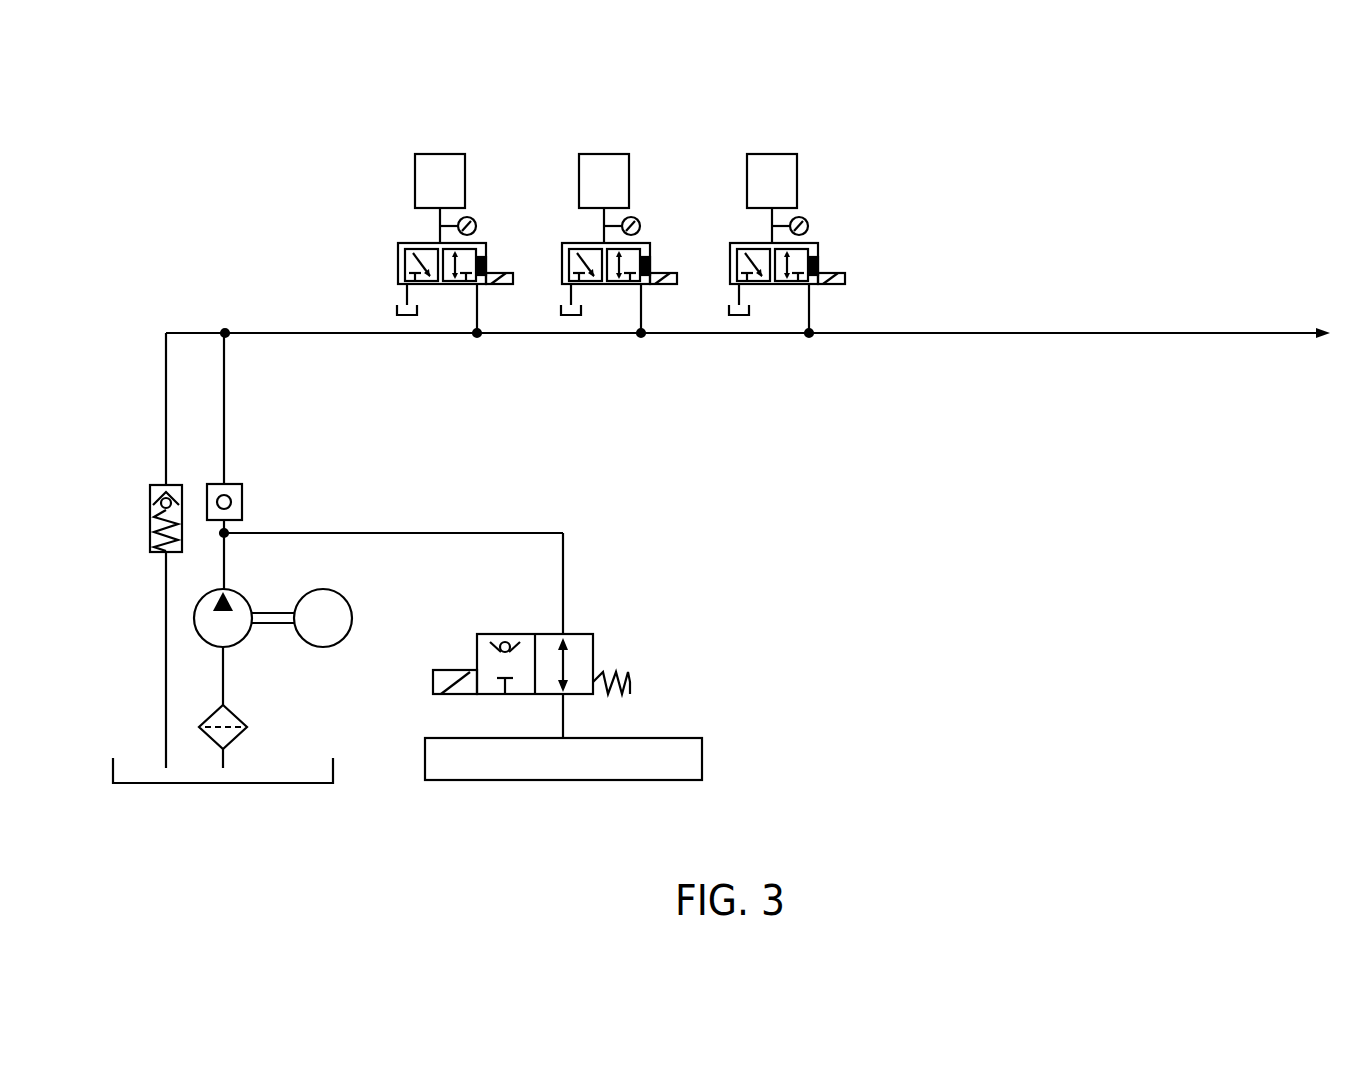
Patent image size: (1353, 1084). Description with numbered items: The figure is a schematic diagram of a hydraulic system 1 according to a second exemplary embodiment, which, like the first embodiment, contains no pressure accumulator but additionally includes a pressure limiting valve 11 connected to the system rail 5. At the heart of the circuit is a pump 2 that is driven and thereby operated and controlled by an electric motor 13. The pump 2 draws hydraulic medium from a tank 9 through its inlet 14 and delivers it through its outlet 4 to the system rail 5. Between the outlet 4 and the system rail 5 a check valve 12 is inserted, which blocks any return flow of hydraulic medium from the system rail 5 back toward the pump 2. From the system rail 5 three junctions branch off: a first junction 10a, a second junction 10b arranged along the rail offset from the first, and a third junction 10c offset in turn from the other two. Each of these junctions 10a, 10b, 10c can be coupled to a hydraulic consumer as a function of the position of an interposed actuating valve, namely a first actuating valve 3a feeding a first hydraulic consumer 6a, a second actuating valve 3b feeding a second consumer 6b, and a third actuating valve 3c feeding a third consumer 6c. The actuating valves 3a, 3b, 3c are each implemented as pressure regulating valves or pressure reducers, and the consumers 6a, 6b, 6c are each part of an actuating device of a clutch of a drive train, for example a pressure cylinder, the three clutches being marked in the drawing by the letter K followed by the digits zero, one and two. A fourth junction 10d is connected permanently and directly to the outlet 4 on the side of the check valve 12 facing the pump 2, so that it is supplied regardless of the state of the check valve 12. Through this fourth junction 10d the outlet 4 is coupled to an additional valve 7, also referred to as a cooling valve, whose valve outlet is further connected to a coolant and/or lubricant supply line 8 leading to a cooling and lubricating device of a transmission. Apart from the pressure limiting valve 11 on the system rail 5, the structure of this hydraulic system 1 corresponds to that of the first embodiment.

The hydraulic system 1 is at (203, 191).
The pump 2 is at (240, 607).
The first actuating valve 3a is at (410, 243).
The second actuating valve 3b is at (574, 243).
The third actuating valve 3c is at (742, 243).
The outlet 4 is at (205, 582).
The system rail 5 is at (716, 335).
The first hydraulic consumer 6a is at (443, 154).
The second hydraulic consumer 6b is at (607, 154).
The third hydraulic consumer 6c is at (775, 154).
The additional valve 7 is at (593, 633).
The coolant and/or lubricant supply line 8 is at (640, 712).
The tank 9 is at (294, 785).
The first junction 10a is at (479, 311).
The second junction 10b is at (643, 311).
The third junction 10c is at (811, 311).
The fourth junction 10d is at (387, 532).
The pressure limiting valve 11 is at (152, 505).
The check valve 12 is at (232, 482).
The electric motor 13 is at (353, 617).
The inlet 14 is at (205, 663).